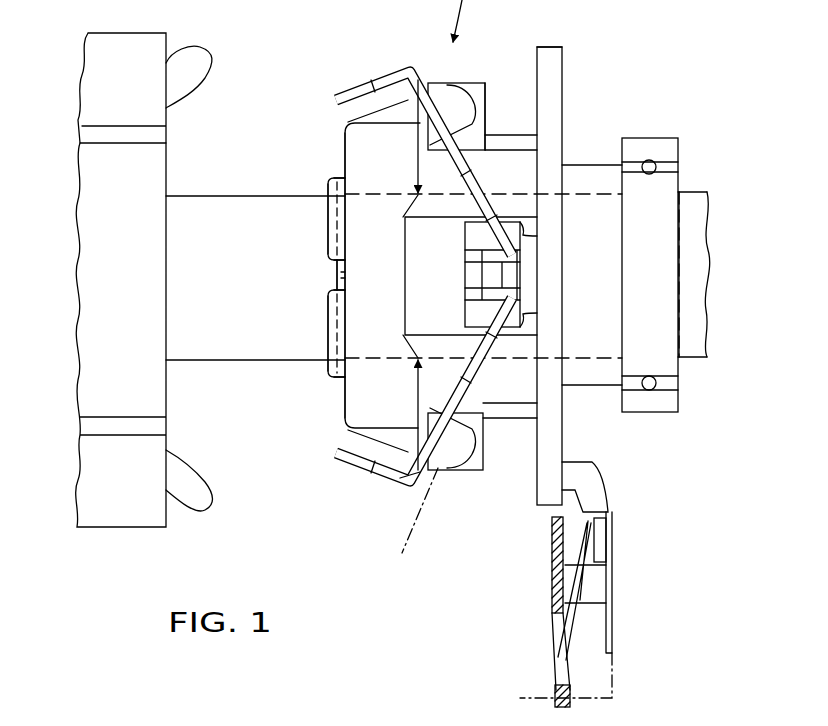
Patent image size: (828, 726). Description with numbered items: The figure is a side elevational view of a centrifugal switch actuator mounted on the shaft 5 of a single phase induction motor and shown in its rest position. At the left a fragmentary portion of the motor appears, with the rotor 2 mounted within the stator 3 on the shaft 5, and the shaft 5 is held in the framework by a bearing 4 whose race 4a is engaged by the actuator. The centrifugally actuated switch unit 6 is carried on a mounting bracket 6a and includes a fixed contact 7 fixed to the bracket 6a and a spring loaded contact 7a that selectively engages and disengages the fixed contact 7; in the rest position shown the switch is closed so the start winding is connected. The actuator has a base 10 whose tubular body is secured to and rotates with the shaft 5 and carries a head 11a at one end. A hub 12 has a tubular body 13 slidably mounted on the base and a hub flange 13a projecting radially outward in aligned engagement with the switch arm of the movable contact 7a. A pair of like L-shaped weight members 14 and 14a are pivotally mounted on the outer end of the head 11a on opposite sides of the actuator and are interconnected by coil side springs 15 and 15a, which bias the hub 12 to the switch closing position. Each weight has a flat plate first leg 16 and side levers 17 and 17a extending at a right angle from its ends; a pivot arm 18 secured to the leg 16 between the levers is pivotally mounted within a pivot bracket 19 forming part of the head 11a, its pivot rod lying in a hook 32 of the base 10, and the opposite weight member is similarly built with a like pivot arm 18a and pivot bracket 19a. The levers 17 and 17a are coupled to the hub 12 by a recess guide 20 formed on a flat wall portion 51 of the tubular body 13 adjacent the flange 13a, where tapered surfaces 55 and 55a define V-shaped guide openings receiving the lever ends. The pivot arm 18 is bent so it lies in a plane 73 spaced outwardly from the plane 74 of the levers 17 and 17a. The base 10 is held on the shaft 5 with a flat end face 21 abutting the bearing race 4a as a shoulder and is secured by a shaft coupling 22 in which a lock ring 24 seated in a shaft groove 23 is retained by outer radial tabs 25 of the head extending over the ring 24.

The rotor 2 is at (115, 292).
The stator 3 is at (133, 92).
The bearing 4 is at (652, 136).
The bearing race 4a is at (635, 182).
The shaft 5 is at (258, 196).
The switch unit 6 is at (548, 579).
The mounting bracket 6a is at (554, 697).
The fixed contact 7 is at (606, 542).
The spring loaded contact 7a is at (573, 537).
The base 10 is at (338, 424).
The head 11a is at (358, 183).
The hub 12 is at (515, 130).
The tubular body 13 is at (522, 140).
The hub flange 13a is at (550, 46).
The weight member 14 is at (418, 134).
The weight member 14a is at (415, 403).
The side spring 15 is at (415, 130).
The side spring 15a is at (418, 428).
The first leg 16 is at (358, 95).
The side lever 17 is at (475, 210).
The side lever 17a is at (472, 380).
The pivot arm 18 is at (472, 106).
The lower roller 18a is at (449, 455).
The pivot bracket 19 is at (462, 82).
The lower roller housing 19a is at (466, 480).
The recess guide 20 is at (526, 286).
The flat end face 21 is at (620, 337).
The shaft coupling 22 is at (320, 292).
The groove 23 is at (341, 332).
The lock ring 24 is at (330, 263).
The outer radial tabs 25 is at (337, 222).
The hook 32 is at (488, 82).
The flat wall portion 51 is at (447, 297).
The tapered inner surface 55 is at (523, 234).
The lower protrusion 55a is at (523, 317).
The plane of hinge arm 73 is at (437, 470).
The plane of levers 74 is at (410, 487).